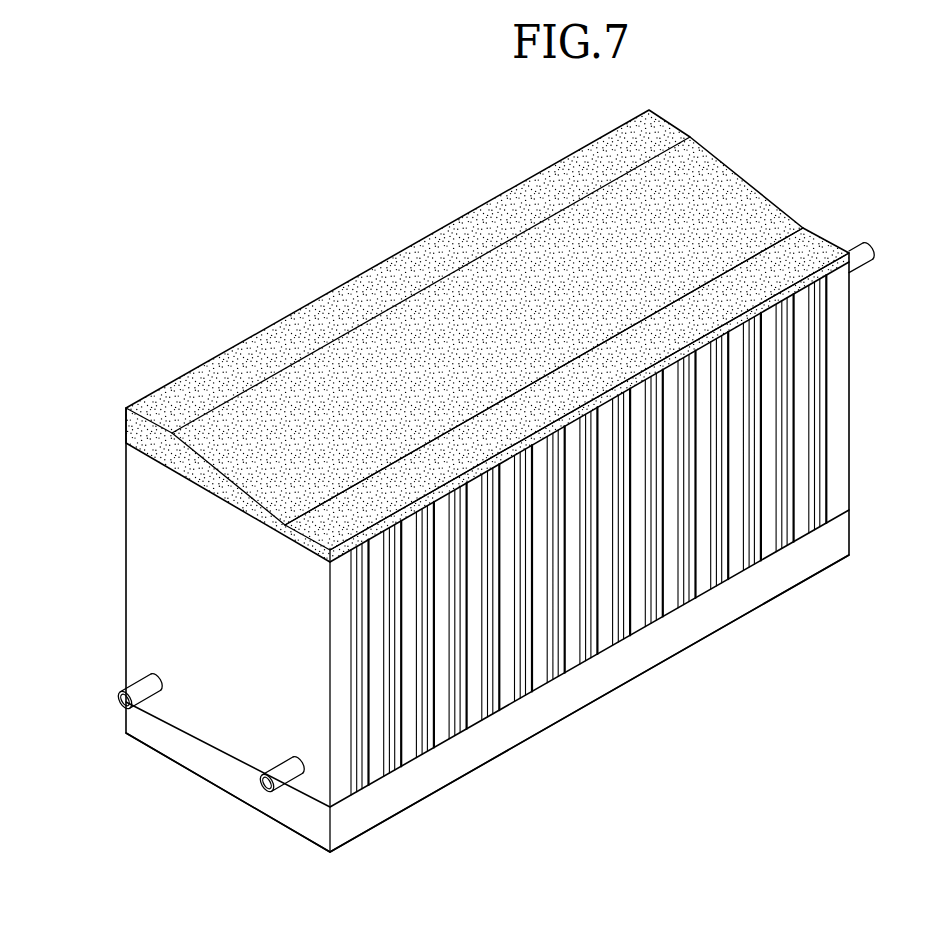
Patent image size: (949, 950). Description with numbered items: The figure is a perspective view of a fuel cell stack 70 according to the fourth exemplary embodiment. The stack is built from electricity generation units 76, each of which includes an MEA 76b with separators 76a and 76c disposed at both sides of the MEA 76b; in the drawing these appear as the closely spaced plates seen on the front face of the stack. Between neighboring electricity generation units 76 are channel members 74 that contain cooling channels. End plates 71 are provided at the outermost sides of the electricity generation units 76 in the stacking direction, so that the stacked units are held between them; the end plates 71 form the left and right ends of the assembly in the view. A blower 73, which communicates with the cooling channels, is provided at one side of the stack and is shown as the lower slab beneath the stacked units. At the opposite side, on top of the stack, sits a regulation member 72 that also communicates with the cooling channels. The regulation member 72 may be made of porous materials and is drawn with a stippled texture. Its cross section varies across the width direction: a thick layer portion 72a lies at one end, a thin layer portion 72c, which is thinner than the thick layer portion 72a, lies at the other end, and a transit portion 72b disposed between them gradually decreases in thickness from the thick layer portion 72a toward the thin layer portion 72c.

The fuel cell stack 70 is at (365, 176).
The end plate 71 is at (850, 392).
The regulation member 72 is at (758, 168).
The thick layer portion 72a is at (233, 367).
The transit portion 72b is at (385, 357).
The thin layer portion 72c is at (812, 247).
The blower 73 is at (462, 757).
The channel member 74 is at (505, 680).
The electricity generation unit 76 is at (781, 687).
The separator 76a is at (651, 608).
The MEA 76b is at (657, 600).
The separator 76c is at (665, 602).